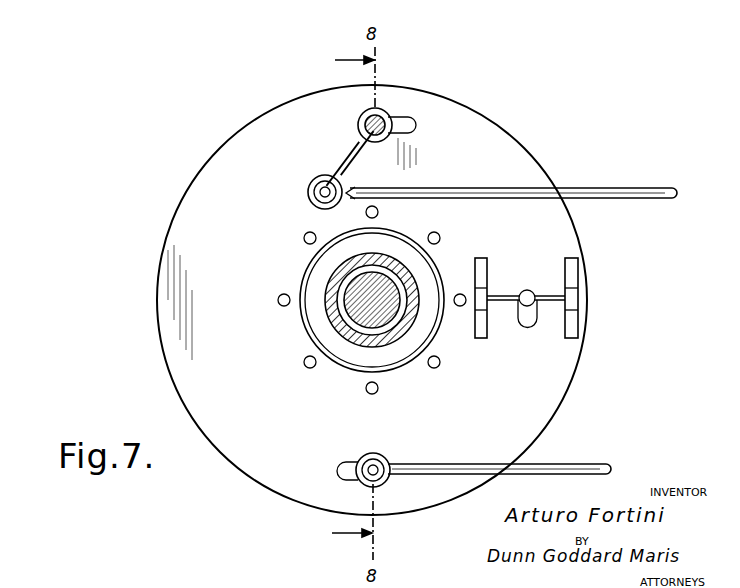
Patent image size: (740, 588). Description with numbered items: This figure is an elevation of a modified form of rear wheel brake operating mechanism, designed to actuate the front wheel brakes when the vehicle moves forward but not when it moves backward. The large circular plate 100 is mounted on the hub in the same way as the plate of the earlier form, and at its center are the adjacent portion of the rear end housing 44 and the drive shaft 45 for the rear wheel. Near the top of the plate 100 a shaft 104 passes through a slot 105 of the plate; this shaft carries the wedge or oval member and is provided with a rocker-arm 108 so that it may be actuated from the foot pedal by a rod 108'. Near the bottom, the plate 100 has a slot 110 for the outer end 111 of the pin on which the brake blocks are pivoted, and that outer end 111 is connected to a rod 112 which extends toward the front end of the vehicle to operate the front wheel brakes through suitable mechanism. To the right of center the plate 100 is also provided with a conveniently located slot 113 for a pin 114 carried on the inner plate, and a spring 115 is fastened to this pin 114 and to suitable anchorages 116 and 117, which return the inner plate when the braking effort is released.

The plate 100 is at (372, 300).
The rear end housing 44 is at (332, 276).
The drive shaft 45 is at (356, 300).
The shaft 104 is at (378, 118).
The slot 105 is at (407, 124).
The rocker-arm 108 is at (337, 158).
The rod 108' is at (511, 177).
The slot 110 is at (347, 461).
The outer end of pin 111 is at (378, 465).
The rod 112 is at (467, 462).
The slot 113 is at (523, 324).
The pin 114 is at (528, 290).
The spring 115 is at (549, 301).
The anchorage 116 is at (496, 240).
The anchorage 117 is at (575, 260).